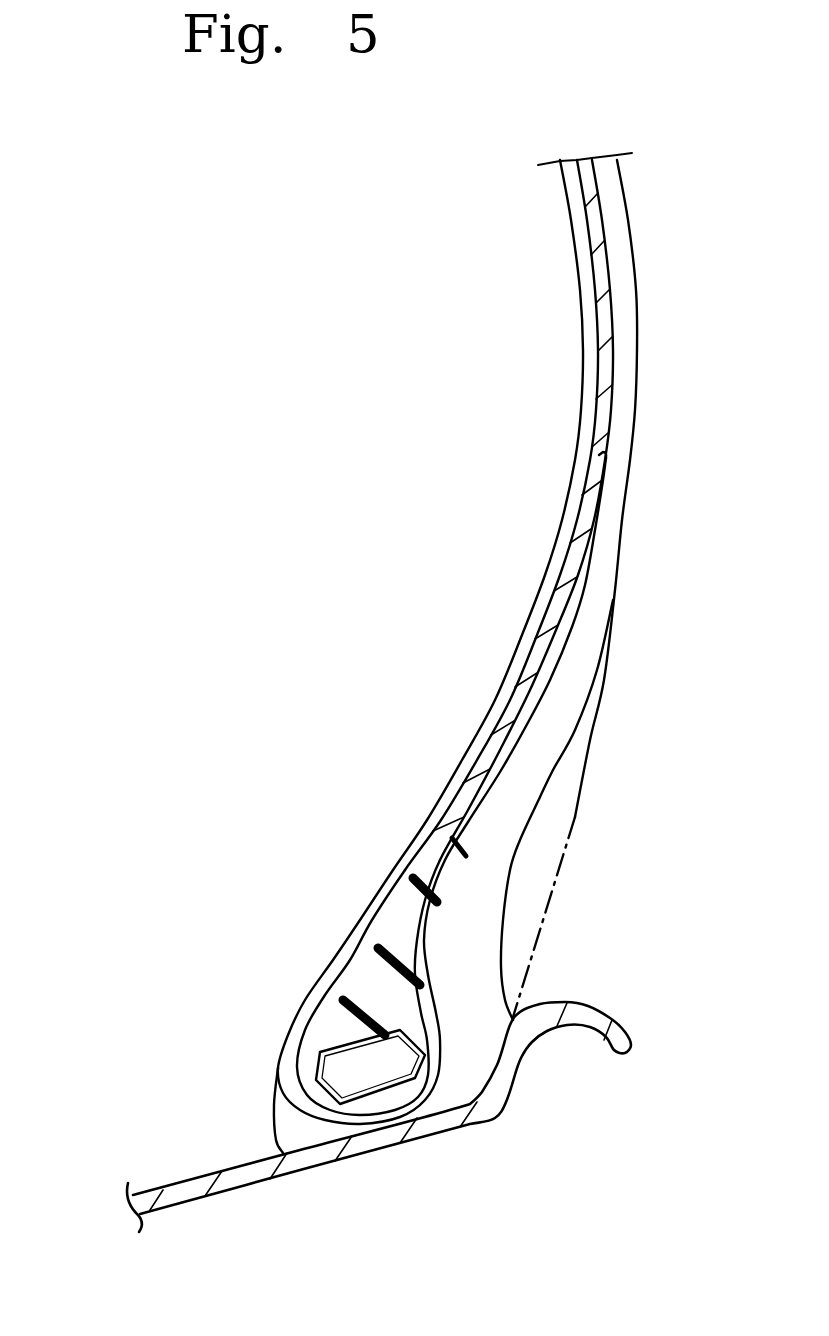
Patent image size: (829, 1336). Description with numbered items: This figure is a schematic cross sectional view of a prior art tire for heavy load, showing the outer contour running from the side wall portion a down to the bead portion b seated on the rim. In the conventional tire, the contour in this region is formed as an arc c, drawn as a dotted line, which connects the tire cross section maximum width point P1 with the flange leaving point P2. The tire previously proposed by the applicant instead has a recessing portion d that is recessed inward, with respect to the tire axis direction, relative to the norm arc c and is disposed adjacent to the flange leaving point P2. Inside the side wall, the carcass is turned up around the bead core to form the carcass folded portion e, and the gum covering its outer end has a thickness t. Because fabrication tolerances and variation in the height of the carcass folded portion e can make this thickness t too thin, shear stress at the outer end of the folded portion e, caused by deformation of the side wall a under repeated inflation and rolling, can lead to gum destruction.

The side wall portion a is at (481, 355).
The bead portion b is at (262, 997).
The arc c is at (583, 793).
The recessing portion d is at (513, 870).
The carcass folded portion e is at (575, 622).
The thickness of the gum t is at (613, 460).
The tire cross section maximum width point P1 is at (638, 303).
The flange leaving point P2 is at (513, 1020).